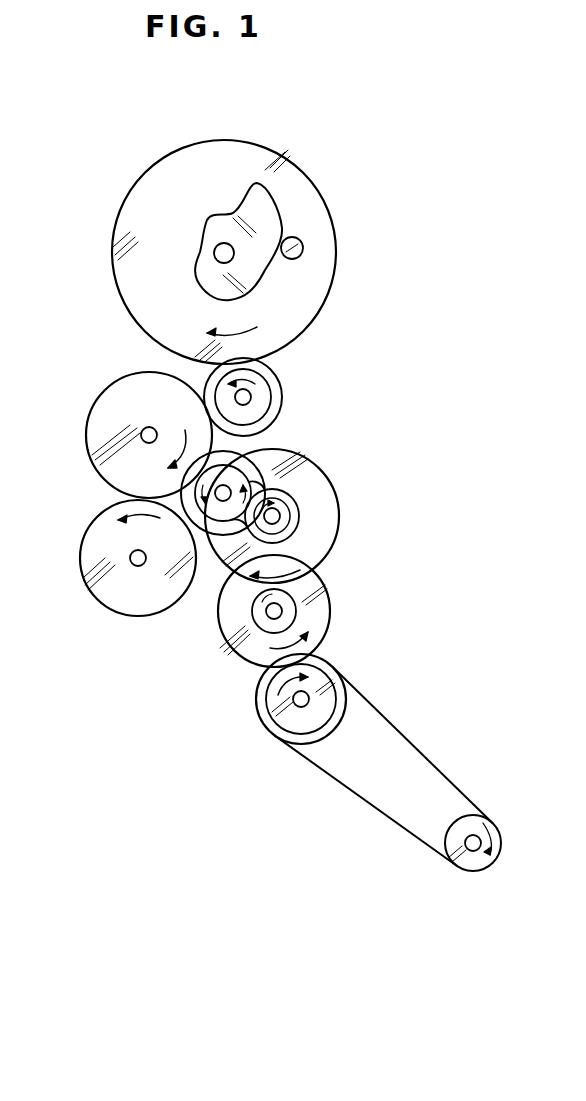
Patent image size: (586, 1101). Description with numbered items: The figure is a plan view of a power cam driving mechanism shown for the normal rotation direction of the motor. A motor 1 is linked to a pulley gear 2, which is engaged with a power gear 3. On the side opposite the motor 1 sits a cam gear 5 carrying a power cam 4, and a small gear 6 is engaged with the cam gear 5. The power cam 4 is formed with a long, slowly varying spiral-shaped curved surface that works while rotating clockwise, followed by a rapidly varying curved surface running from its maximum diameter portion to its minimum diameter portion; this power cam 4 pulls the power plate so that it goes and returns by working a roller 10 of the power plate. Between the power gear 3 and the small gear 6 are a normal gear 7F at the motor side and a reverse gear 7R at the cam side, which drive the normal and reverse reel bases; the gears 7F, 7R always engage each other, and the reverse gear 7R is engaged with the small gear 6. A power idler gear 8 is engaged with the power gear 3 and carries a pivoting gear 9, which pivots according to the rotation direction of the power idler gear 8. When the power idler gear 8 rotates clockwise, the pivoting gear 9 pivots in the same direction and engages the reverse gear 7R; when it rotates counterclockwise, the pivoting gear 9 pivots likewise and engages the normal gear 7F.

The motor 1 is at (467, 823).
The pulley gear 2 is at (318, 687).
The power gear 3 is at (323, 598).
The power cam 4 is at (268, 207).
The cam gear 5 is at (313, 296).
The small gear 6 is at (277, 400).
The reverse gear 7R is at (92, 432).
The normal gear 7F is at (87, 548).
The power idler gear 8 is at (287, 517).
The pivoting gear 9 is at (237, 477).
The roller 10 is at (302, 250).